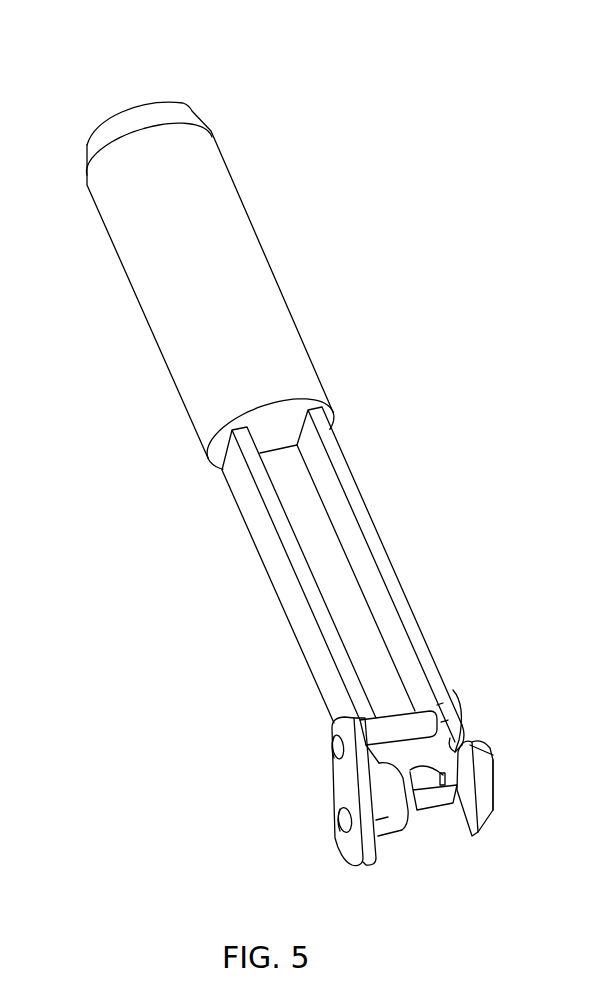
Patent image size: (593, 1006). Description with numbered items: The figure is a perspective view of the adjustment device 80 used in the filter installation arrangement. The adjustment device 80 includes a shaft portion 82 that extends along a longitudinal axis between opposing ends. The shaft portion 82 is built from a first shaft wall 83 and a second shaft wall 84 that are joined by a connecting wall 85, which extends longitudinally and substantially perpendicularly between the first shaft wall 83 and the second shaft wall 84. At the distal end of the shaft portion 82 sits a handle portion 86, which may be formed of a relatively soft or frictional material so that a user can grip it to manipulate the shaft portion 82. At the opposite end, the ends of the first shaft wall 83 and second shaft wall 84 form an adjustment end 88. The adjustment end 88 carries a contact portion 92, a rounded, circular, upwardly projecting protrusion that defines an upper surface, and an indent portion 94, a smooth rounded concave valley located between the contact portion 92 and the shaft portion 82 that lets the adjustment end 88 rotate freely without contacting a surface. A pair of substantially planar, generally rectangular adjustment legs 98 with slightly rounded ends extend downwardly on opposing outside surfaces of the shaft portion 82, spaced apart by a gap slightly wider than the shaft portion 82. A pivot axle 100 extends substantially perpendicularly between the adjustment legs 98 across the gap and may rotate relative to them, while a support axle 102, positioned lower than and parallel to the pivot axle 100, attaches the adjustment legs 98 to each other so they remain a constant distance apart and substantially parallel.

The adjustment device 80 is at (66, 93).
The shaft portion 82 is at (342, 574).
The first shaft wall 83 is at (292, 550).
The second shaft wall 84 is at (377, 545).
The connecting wall 85 is at (363, 617).
The handle portion 86 is at (262, 238).
The adjustment end 88 is at (500, 790).
The contact portion 92 is at (492, 752).
The indent portion 94 is at (457, 752).
The adjustment legs 98 is at (337, 843).
The pivot axle 100 is at (392, 723).
The support axle 102 is at (430, 813).